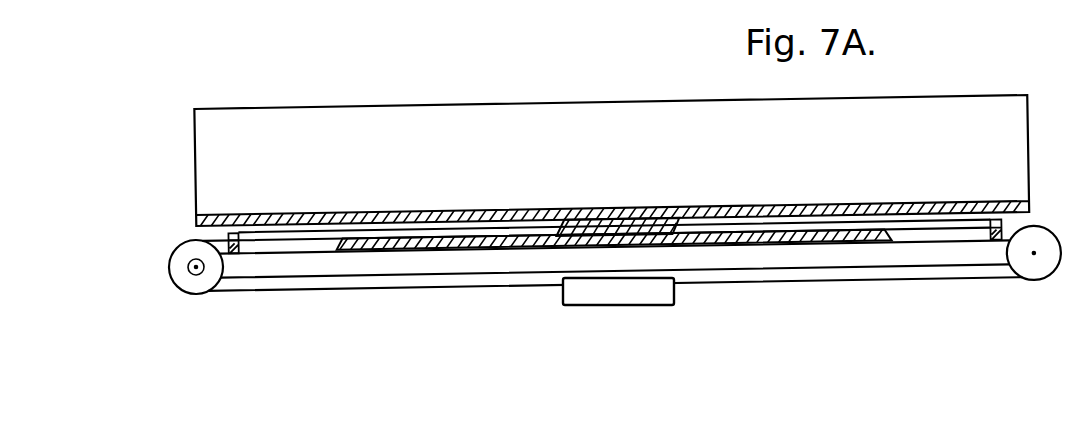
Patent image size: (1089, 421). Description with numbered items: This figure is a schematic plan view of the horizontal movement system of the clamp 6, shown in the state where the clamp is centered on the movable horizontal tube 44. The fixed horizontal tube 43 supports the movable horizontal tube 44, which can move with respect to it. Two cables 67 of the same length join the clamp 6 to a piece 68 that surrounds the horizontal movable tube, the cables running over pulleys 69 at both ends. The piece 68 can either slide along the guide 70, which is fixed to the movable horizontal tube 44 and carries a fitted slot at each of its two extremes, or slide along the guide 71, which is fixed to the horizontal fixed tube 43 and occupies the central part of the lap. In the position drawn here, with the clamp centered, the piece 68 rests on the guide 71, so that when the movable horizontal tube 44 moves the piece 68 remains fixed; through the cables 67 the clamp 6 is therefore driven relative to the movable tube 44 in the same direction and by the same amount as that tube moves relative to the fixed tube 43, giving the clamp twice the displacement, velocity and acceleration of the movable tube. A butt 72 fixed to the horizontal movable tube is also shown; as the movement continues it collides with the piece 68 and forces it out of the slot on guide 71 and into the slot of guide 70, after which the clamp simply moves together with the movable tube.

The horizontal tube 43 is at (422, 125).
The guide 71 is at (536, 211).
The piece 68 is at (622, 212).
The butt 72 is at (249, 221).
The guide 70 is at (441, 252).
The movable horizontal tube 44 is at (328, 270).
The cables 67 is at (246, 293).
The pulleys 69 is at (196, 294).
The clamp 6 is at (642, 302).